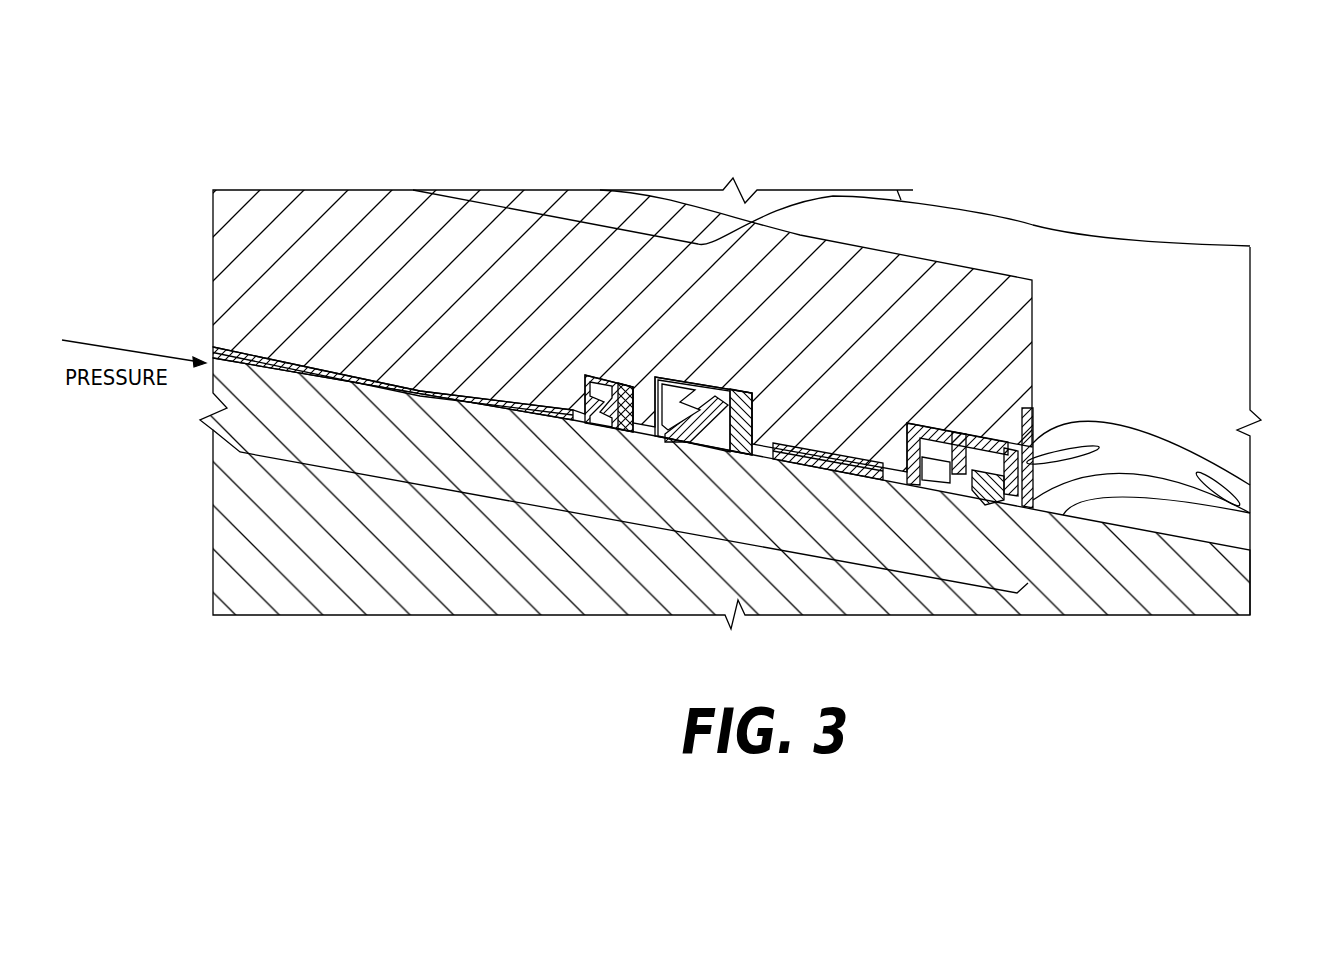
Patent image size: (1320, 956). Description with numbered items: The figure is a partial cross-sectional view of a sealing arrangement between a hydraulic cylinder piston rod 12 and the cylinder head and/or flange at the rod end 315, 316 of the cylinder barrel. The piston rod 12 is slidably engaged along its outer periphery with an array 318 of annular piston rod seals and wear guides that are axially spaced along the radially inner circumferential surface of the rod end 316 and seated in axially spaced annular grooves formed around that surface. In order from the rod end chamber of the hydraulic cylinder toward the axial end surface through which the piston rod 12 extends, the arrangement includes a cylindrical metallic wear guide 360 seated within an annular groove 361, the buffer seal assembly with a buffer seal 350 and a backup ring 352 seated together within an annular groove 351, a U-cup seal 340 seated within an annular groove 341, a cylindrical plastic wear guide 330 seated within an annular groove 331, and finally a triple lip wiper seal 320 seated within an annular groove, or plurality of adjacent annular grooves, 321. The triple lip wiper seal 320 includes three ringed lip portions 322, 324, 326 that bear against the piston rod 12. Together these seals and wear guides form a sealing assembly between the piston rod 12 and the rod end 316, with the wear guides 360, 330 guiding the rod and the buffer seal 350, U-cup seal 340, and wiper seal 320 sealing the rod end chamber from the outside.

The piston rod 12 is at (1180, 575).
The rod end 315 is at (773, 206).
The rod end 316 is at (1052, 257).
The array of annular piston rod seals and wear guides 318 is at (597, 520).
The triple lip wiper seal 320 is at (1087, 442).
The annular groove 321 is at (985, 440).
The ringed lip portion 322 is at (920, 485).
The ringed lip portion 324 is at (964, 490).
The ringed lip portion 326 is at (1020, 500).
The cylindrical plastic wear guide 330 is at (828, 344).
The annular groove 331 is at (848, 465).
The U-cup seal 340 is at (703, 295).
The annular groove 341 is at (724, 400).
The buffer seal 350 is at (596, 289).
The annular groove 351 is at (592, 385).
The backup ring 352 is at (624, 392).
The cylindrical metallic wear guide 360 is at (288, 345).
The annular groove 361 is at (432, 395).